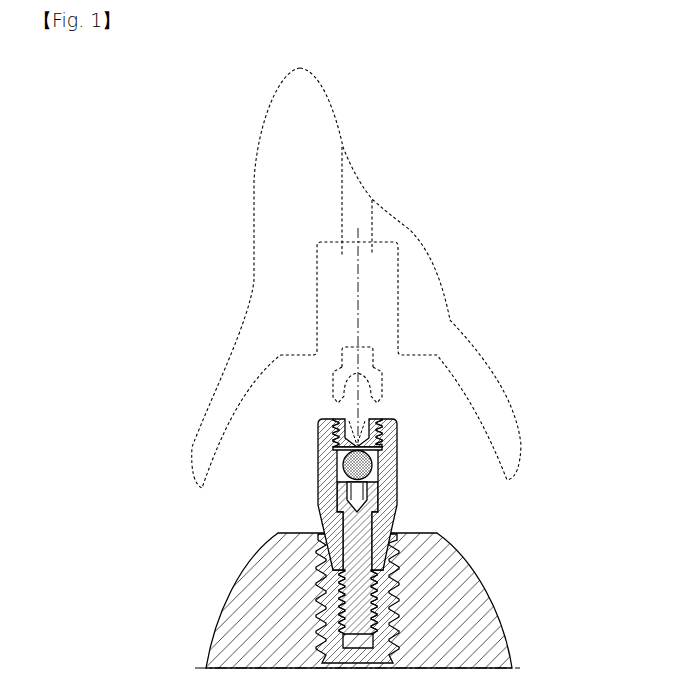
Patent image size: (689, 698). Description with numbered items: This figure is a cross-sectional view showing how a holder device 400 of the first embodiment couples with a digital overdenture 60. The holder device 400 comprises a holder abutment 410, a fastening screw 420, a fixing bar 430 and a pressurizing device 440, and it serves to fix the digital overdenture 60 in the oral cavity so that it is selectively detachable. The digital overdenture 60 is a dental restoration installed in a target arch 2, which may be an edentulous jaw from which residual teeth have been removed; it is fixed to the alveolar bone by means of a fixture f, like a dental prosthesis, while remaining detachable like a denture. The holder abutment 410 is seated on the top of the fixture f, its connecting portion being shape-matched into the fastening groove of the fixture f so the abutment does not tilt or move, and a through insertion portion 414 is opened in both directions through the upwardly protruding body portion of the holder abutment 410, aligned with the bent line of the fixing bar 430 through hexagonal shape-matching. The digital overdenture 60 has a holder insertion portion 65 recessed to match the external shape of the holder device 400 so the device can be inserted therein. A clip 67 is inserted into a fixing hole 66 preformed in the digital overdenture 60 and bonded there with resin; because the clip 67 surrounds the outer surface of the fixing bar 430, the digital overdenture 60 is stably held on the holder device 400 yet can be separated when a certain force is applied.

The target arch 2 is at (472, 625).
The fixture f is at (333, 590).
The digital overdenture 60 is at (254, 256).
The holder insertion portion 65 is at (398, 300).
The fixing hole 66 is at (380, 225).
The clip 67 is at (341, 371).
The holder device 400 is at (310, 526).
The holder abutment 410 is at (400, 498).
The through insertion portion 414 is at (383, 461).
The fastening screw 420 is at (334, 608).
The fixing bar 430 is at (379, 464).
The pressurizing device 440 is at (330, 447).